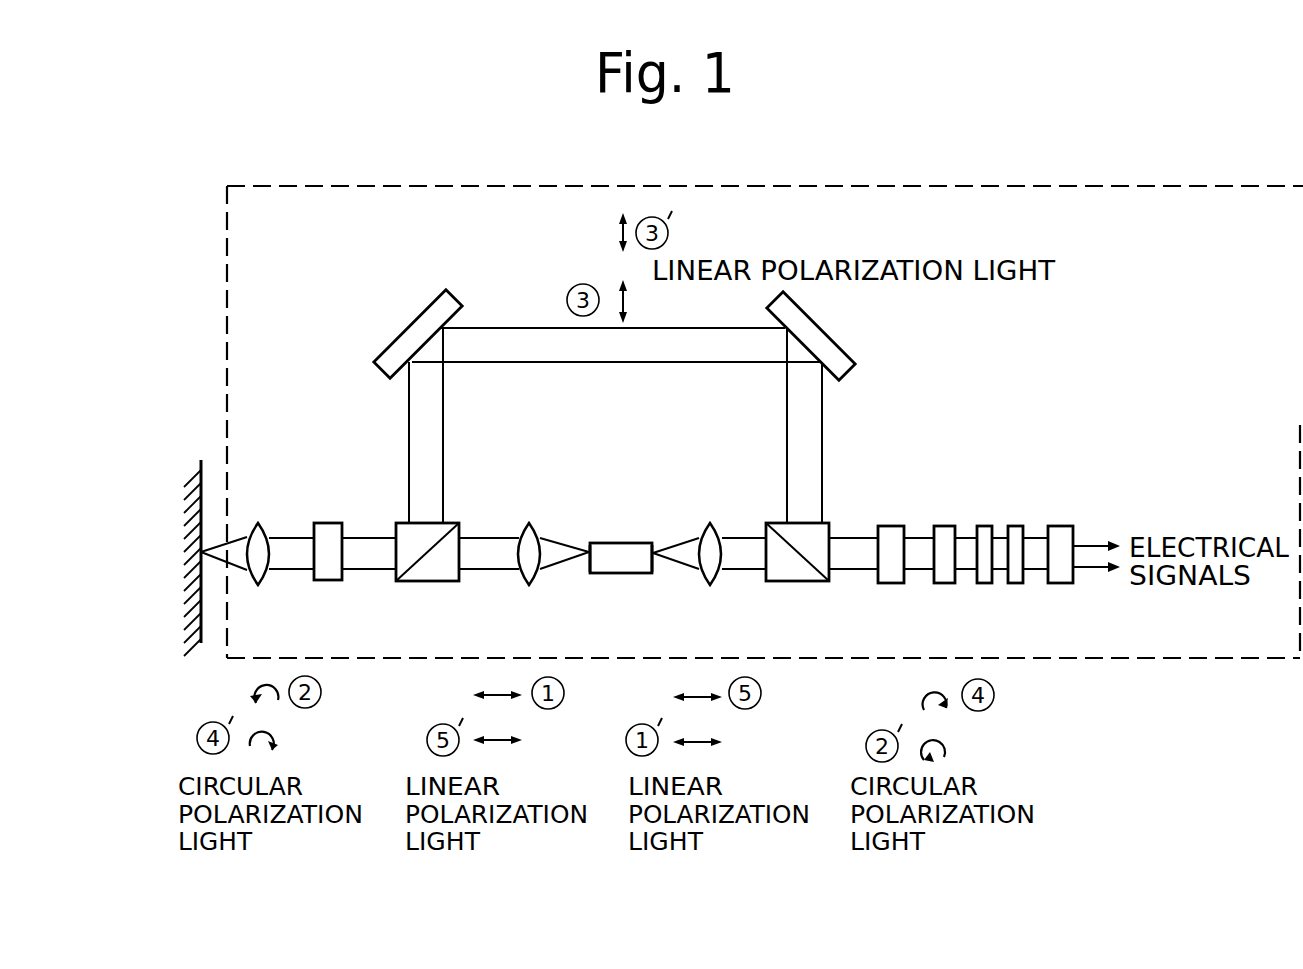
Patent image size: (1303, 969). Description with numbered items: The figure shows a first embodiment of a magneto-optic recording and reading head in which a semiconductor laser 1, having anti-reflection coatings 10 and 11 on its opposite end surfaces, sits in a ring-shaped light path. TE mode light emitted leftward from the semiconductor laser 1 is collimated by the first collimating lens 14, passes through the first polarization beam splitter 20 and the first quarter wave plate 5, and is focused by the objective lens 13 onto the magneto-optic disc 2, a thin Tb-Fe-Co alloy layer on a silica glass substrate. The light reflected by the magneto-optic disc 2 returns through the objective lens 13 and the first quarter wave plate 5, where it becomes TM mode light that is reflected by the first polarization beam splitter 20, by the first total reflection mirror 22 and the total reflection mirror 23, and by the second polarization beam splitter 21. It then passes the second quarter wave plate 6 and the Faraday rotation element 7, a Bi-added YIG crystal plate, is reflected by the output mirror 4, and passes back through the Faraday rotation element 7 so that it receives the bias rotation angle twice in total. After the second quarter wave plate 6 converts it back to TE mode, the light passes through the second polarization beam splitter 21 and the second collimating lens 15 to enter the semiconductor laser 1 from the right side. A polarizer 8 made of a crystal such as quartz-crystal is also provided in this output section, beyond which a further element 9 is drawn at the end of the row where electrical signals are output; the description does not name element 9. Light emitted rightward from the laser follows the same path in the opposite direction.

The semiconductor laser 1 is at (623, 552).
The magneto-optic disc 2 is at (197, 554).
The output mirror 4 is at (986, 525).
The first quarter wave plate 5 is at (331, 582).
The second quarter wave plate 6 is at (886, 585).
The Faraday rotation element 7 is at (946, 525).
The polarizer 8 is at (1015, 585).
The photodetector 9 is at (1064, 525).
The anti-reflection coating 10 is at (591, 576).
The anti-reflection coating 11 is at (654, 576).
The objective lens 13 is at (259, 587).
The first collimating lens 14 is at (530, 587).
The second collimating lens 15 is at (710, 587).
The first polarization beam splitter 20 is at (427, 583).
The second polarization beam splitter 21 is at (805, 583).
The first total reflection mirror 22 is at (412, 323).
The total reflection mirror 23 is at (847, 343).